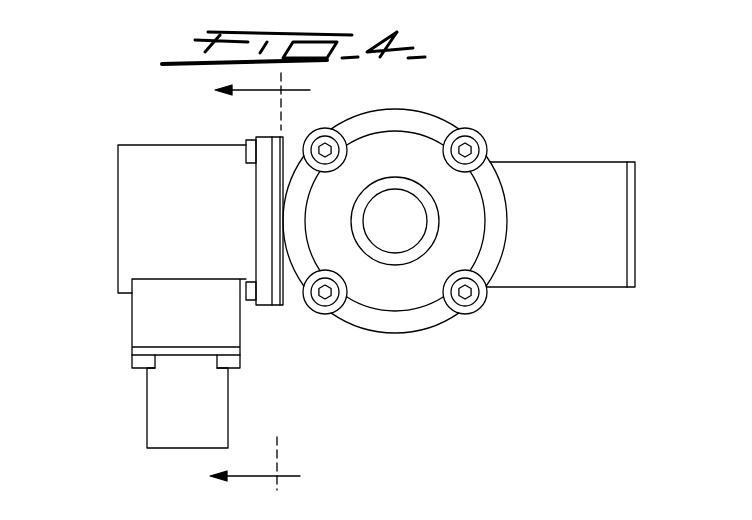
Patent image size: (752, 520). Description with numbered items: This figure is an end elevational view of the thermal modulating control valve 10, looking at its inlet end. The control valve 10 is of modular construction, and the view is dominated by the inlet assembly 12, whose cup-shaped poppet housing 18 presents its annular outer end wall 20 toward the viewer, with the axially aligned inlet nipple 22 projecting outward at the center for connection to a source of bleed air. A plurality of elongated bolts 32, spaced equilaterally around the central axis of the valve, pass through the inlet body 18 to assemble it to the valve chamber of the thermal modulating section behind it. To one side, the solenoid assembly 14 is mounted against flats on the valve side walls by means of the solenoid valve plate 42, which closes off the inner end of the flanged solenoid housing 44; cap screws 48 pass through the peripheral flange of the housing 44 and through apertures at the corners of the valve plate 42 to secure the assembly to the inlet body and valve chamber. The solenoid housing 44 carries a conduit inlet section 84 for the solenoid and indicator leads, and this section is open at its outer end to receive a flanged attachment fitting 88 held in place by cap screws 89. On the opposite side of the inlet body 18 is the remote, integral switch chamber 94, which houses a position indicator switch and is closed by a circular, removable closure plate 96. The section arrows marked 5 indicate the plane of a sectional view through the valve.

The section line 5- 5 is at (270, 281).
The thermal modulating control valve 10 is at (487, 234).
The inlet assembly 12 is at (415, 229).
The solenoid assembly 14 is at (155, 276).
The poppet housing 18 is at (407, 123).
The annular outer end wall 20 is at (377, 297).
The inlet nipple 22 is at (432, 226).
The elongated bolts 32 is at (322, 146).
The solenoid valve plate 42 is at (273, 188).
The solenoid housing 44 is at (118, 170).
The cap screws 48 is at (247, 158).
The conduit inlet section 84 is at (176, 318).
The attachment fitting 88 is at (174, 405).
The cap screws 89 is at (140, 366).
The switch chamber 94 is at (558, 162).
The closure plate 96 is at (632, 243).